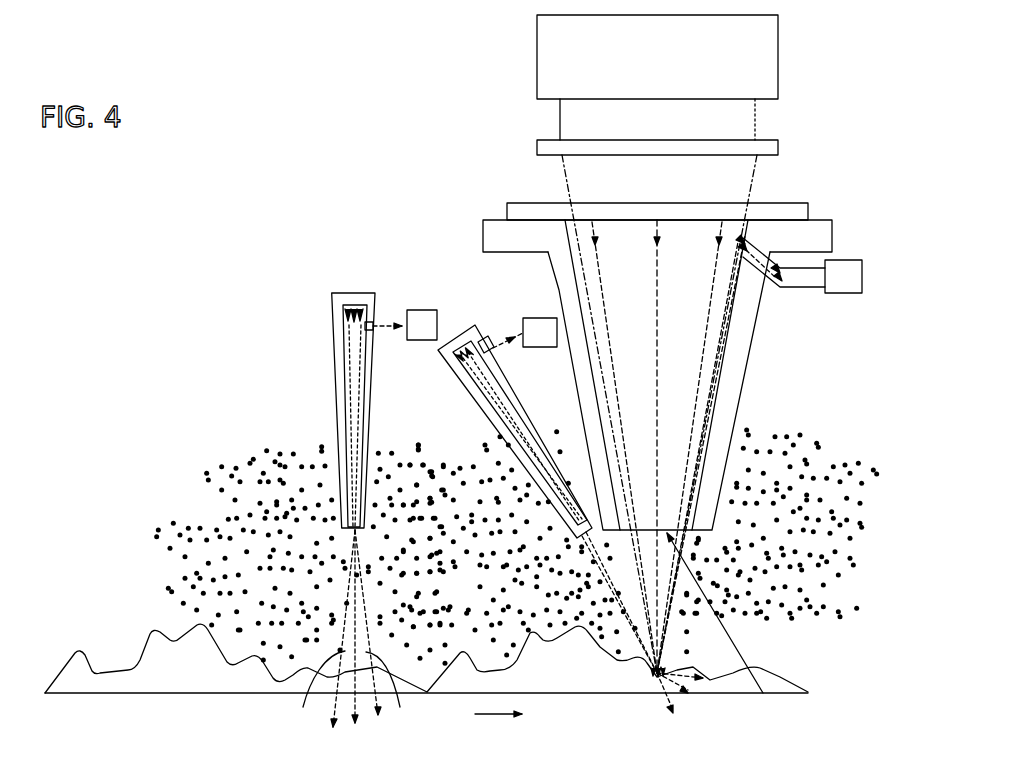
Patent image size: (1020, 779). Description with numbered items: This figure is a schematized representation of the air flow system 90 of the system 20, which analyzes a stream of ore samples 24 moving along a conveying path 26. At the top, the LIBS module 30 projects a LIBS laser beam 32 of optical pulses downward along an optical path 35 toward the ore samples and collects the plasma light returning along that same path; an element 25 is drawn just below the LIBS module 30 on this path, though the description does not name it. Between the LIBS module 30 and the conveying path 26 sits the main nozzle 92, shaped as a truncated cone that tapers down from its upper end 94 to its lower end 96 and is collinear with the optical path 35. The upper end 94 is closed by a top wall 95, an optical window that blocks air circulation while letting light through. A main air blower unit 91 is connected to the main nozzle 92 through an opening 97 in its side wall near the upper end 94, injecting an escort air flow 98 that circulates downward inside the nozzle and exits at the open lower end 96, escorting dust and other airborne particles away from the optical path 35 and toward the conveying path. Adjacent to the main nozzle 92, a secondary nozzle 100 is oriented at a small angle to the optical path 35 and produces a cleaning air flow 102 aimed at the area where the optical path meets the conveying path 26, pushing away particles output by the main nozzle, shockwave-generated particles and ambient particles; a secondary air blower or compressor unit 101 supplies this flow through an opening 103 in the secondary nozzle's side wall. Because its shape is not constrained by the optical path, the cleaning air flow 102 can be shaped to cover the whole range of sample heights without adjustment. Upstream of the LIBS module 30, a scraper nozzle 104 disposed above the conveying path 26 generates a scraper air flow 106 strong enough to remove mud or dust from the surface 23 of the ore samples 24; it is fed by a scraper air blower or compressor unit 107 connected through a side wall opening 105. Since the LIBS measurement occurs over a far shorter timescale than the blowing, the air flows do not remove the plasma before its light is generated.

The system 20 is at (263, 68).
The LIBS module 30 is at (646, 62).
The LIBS laser beam 32 is at (569, 115).
The optical plate / lens 25 is at (537, 148).
The air flow system 90 is at (800, 122).
The upper end 94 is at (755, 190).
The top wall 95 is at (506, 212).
The main air blower unit 91 is at (862, 277).
The opening 97 is at (762, 272).
The main nozzle 92 is at (752, 341).
The optical path 35 is at (716, 392).
The escort air flow 98 is at (683, 450).
The lower end 96 is at (723, 631).
The cleaning air flow 102 is at (640, 630).
The conveying path 26 is at (492, 716).
The surface 23 is at (390, 691).
The scraper air flow 106 is at (315, 689).
The ore samples 24 is at (237, 678).
The scraper nozzle 104 is at (323, 490).
The side wall opening 105 is at (370, 320).
The scraper air blower unit 107 is at (423, 310).
The secondary nozzle 100 is at (530, 483).
The opening 103 is at (487, 342).
The secondary air blower unit 101 is at (546, 348).